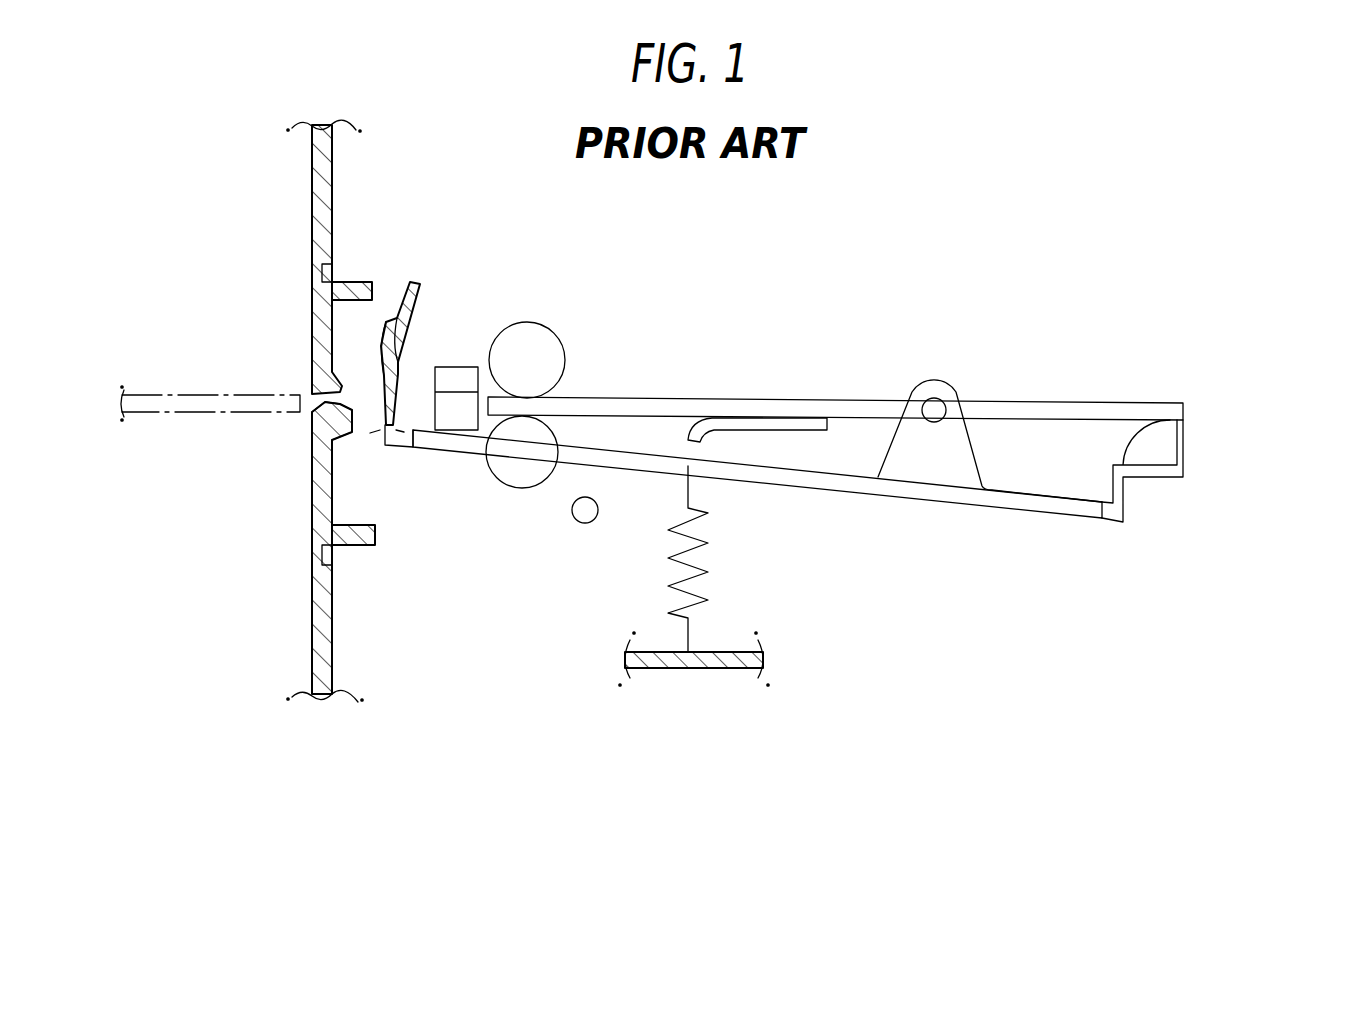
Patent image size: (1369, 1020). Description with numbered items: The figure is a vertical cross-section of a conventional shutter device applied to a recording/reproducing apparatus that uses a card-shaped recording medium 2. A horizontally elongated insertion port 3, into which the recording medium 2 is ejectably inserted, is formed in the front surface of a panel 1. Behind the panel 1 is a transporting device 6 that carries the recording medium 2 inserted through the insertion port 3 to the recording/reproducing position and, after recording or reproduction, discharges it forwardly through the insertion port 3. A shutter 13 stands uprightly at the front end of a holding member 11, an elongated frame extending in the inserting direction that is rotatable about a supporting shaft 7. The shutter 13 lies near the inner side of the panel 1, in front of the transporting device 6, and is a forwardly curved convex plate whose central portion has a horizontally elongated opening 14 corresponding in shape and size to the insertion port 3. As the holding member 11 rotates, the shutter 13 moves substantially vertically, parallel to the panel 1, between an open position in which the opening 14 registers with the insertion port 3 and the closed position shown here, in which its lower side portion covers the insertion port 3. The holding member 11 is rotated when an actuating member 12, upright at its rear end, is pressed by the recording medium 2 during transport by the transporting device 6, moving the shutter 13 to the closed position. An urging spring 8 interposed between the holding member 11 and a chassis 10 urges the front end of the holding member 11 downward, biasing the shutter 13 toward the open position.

The panel 1 is at (302, 212).
The recording medium 2 is at (208, 388).
The insertion port 3 is at (312, 418).
The transporting device 6 is at (575, 359).
The supporting shaft 7 is at (933, 424).
The urging spring 8 is at (712, 558).
The chassis 10 is at (692, 676).
The holding member 11 is at (843, 505).
The actuating member 12 is at (1163, 449).
The shutter 13 is at (413, 289).
The opening 14 is at (398, 343).